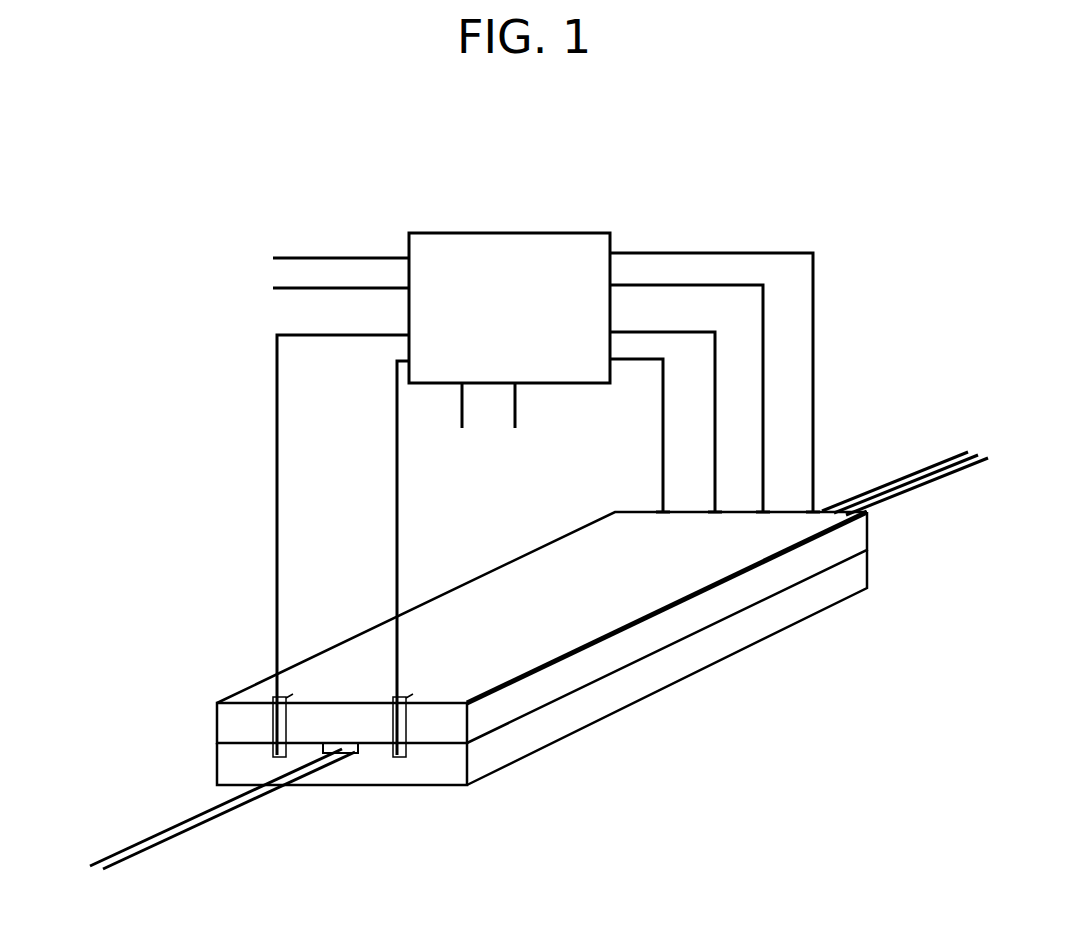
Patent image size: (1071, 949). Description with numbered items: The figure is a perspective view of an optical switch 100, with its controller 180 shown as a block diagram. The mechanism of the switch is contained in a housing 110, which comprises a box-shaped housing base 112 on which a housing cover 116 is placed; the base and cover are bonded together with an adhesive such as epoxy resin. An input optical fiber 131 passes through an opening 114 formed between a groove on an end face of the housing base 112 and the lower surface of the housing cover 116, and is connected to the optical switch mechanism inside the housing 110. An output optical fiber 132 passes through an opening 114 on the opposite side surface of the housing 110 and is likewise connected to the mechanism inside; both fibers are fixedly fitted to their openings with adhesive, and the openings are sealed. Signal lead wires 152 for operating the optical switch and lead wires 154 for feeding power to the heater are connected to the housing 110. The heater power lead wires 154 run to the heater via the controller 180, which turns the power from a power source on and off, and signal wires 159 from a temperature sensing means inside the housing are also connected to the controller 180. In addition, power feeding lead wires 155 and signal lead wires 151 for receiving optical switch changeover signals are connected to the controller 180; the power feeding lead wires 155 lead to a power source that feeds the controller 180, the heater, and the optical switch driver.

The optical switch 100 is at (756, 813).
The housing 110 is at (575, 648).
The housing base 112 is at (722, 645).
The opening 114 is at (353, 755).
The housing cover 116 is at (722, 602).
The input optical fiber 131 is at (200, 823).
The output optical fiber 132 is at (890, 492).
The signal lead wires 151 is at (357, 288).
The signal lead wires 152 is at (396, 480).
The lead wires 154 is at (763, 348).
The power feeding lead wires 155 is at (462, 410).
The signal wires 159 is at (663, 447).
The controller 180 is at (568, 233).